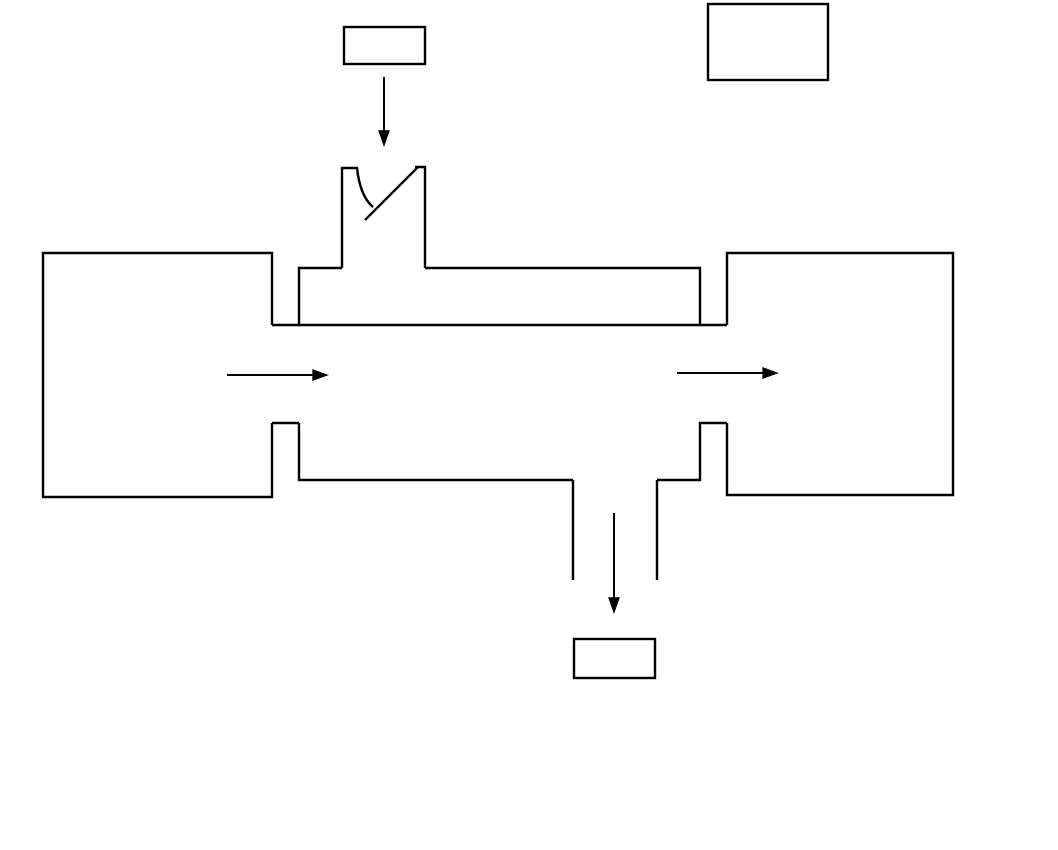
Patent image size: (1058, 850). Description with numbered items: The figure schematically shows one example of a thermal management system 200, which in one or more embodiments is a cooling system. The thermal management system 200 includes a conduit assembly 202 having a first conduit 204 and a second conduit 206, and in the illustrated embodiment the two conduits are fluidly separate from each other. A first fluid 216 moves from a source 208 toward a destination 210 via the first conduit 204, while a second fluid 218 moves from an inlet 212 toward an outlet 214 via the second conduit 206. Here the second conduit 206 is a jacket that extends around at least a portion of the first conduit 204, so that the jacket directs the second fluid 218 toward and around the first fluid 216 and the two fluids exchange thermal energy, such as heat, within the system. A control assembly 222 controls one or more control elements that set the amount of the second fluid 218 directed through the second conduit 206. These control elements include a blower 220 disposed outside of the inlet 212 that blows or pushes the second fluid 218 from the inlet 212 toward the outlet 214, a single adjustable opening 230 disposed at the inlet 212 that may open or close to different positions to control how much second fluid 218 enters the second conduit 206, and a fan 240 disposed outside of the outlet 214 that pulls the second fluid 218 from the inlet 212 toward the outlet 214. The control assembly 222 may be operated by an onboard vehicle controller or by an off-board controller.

The thermal management system 200 is at (880, 88).
The conduit assembly 202 is at (136, 161).
The first conduit 204 is at (377, 423).
The second conduit 206 is at (426, 217).
The source 208 is at (145, 253).
The destination 210 is at (848, 253).
The inlet 212 is at (412, 149).
The outlet 214 is at (684, 574).
The first fluid 216 is at (278, 372).
The second fluid 218 is at (384, 105).
The blower 220 is at (425, 45).
The control assembly 222 is at (768, 42).
The adjustable opening 230 is at (402, 185).
The fan 240 is at (655, 655).